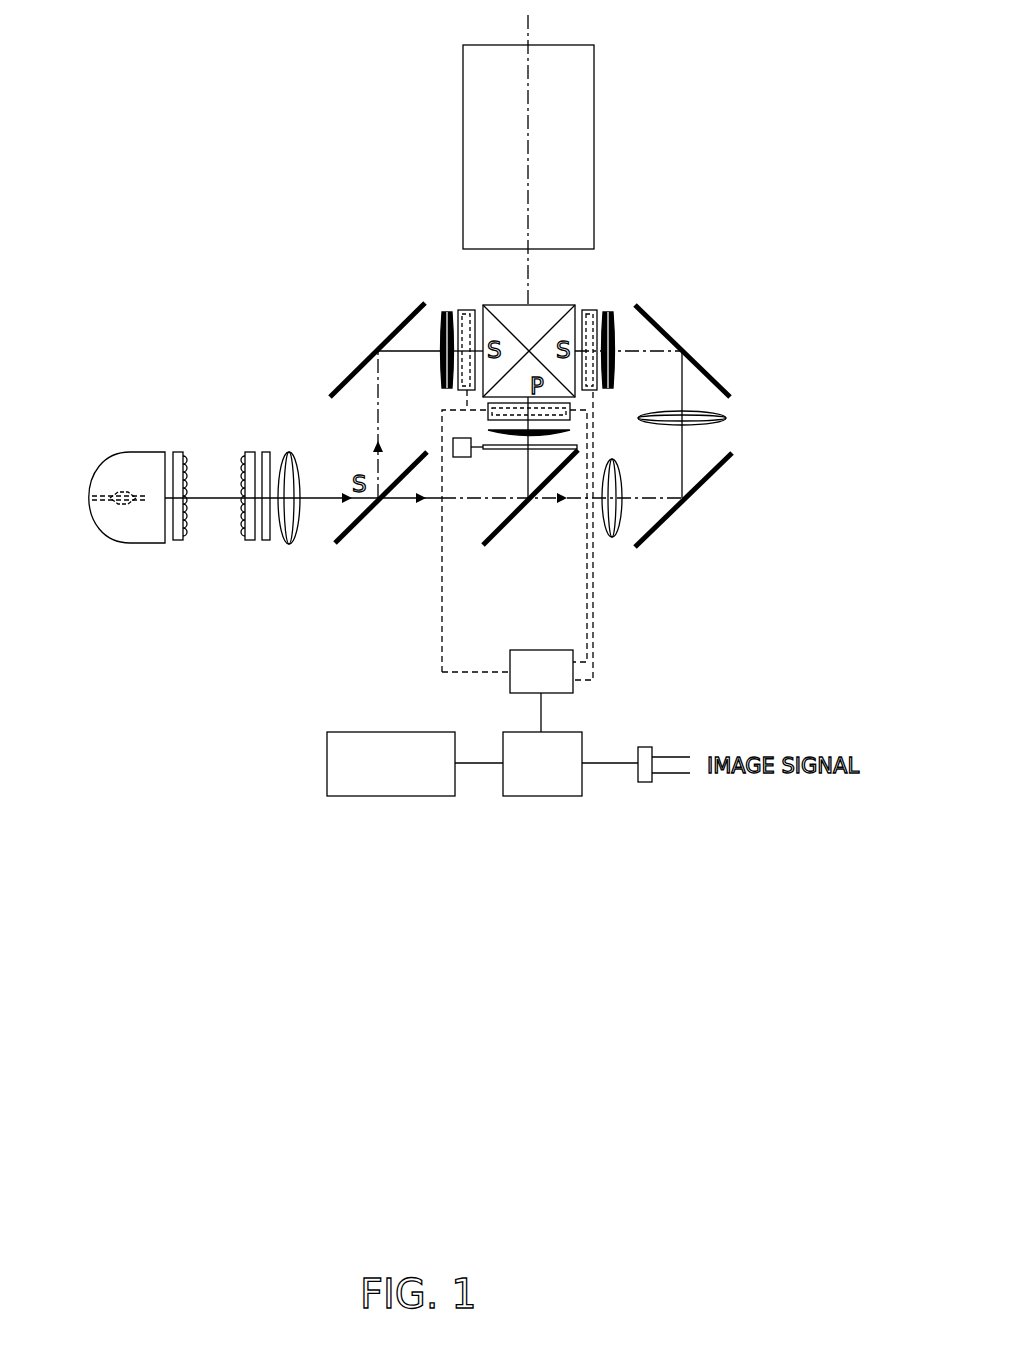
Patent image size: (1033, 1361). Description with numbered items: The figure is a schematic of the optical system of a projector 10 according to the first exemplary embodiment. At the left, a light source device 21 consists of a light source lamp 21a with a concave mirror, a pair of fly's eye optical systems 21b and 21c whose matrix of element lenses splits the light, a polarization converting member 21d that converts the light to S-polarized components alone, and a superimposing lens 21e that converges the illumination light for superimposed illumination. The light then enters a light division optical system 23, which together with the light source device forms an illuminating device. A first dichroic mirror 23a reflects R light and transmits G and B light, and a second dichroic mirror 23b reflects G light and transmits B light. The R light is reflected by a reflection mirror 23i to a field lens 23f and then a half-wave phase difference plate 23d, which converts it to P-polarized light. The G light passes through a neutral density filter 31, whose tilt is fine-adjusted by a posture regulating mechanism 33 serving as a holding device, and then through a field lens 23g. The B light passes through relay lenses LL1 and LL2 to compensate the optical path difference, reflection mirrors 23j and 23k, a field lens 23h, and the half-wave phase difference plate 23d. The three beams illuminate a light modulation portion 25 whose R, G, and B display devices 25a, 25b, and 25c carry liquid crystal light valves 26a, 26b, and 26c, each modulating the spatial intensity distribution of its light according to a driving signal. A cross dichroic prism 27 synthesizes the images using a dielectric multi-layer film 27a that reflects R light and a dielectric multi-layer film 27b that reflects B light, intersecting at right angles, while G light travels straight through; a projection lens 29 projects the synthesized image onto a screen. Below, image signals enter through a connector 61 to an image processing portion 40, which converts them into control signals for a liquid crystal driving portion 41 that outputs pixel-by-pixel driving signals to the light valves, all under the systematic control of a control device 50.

The projector 10 is at (229, 59).
The light source device 21 is at (183, 486).
The light source lamp 21a is at (125, 546).
The fly's eye optical system 21b is at (178, 542).
The fly's eye optical system 21c is at (250, 542).
The polarization converting member 21d is at (266, 542).
The superimposing lens 21e is at (290, 452).
The light division optical system 23 is at (450, 544).
The first dichroic mirror 23a is at (336, 544).
The second dichroic mirror 23b is at (531, 500).
The λ/2 phase difference plate 23d is at (425, 318).
The field lens 23f is at (377, 352).
The field lens 23g is at (570, 433).
The field lens 23h is at (616, 340).
The reflection mirror 23i is at (342, 383).
The reflection mirror 23j is at (660, 525).
The reflection mirror 23k is at (716, 376).
The light modulation portion 25 is at (500, 328).
The R display device 25a is at (464, 308).
The G display device 25b is at (591, 397).
The B display device 25c is at (596, 308).
The liquid crystal light valve 26a is at (440, 345).
The liquid crystal light valve 26b is at (487, 412).
The liquid crystal light valve 26c is at (616, 322).
The cross dichroic prism 27 is at (549, 292).
The dielectric multi-layer film 27a is at (572, 304).
The dielectric multi-layer film 27b is at (487, 304).
The projection lens 29 is at (483, 117).
The neutral density filter 31 is at (578, 447).
The posture regulating mechanism 33 is at (462, 458).
The image processing portion 40 is at (548, 797).
The liquid crystal driving portion 41 is at (573, 672).
The control device 50 is at (390, 797).
The connector 61 is at (645, 747).
The relay lens LL1 is at (613, 540).
The relay lens LL2 is at (727, 418).